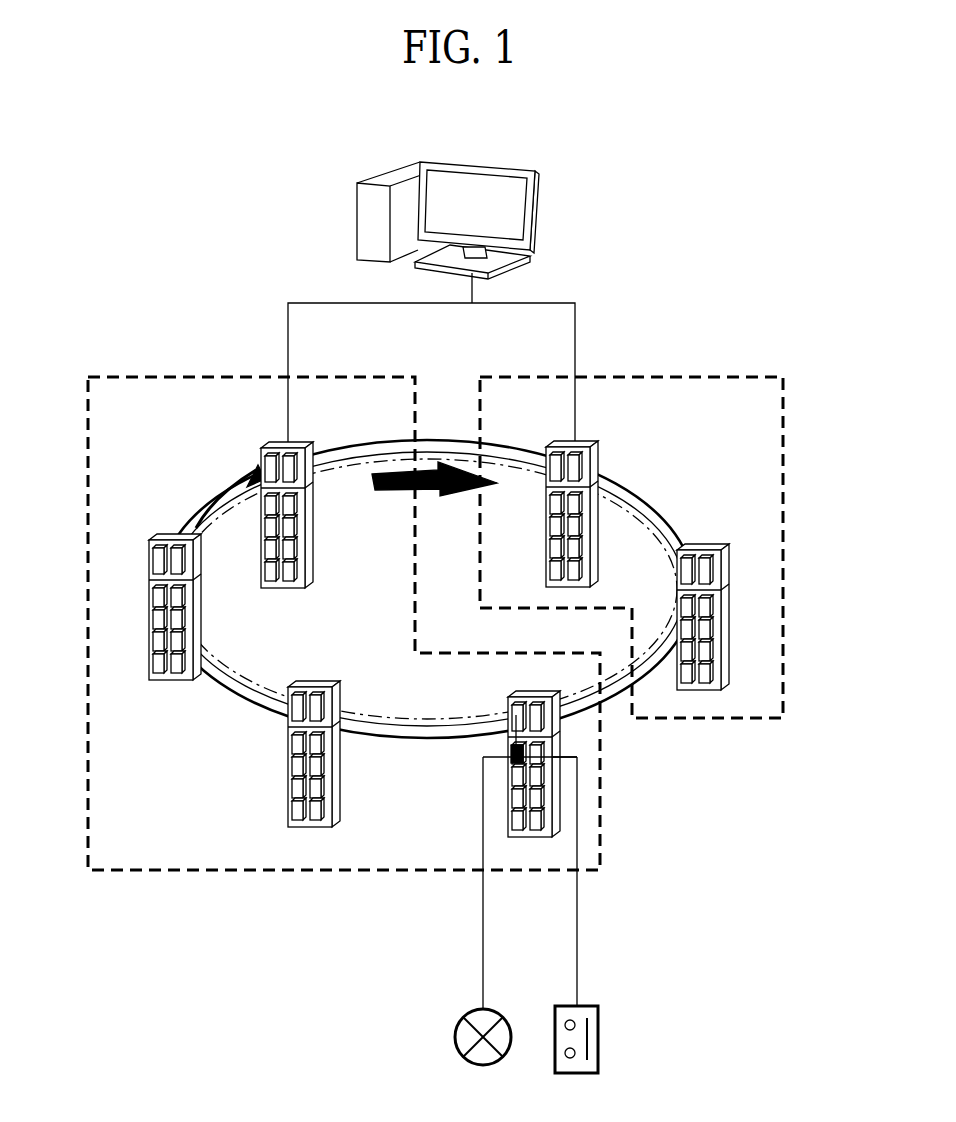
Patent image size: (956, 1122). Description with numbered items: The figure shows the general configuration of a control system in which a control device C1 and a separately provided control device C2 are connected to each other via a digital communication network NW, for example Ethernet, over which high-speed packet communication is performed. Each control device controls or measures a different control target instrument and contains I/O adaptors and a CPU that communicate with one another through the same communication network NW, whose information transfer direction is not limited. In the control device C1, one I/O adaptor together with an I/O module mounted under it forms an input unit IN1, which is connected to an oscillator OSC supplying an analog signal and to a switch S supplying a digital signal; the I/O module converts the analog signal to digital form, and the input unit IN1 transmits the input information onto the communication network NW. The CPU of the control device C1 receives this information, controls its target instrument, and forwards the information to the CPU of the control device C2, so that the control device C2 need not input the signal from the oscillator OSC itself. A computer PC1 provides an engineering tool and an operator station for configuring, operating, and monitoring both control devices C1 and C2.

The computer PC1 is at (538, 192).
The control device C1 is at (198, 375).
The control device C2 is at (672, 375).
The communication network NW is at (445, 438).
The input unit IN1 is at (580, 748).
The oscillator OSC is at (455, 1040).
The switch S is at (598, 1035).